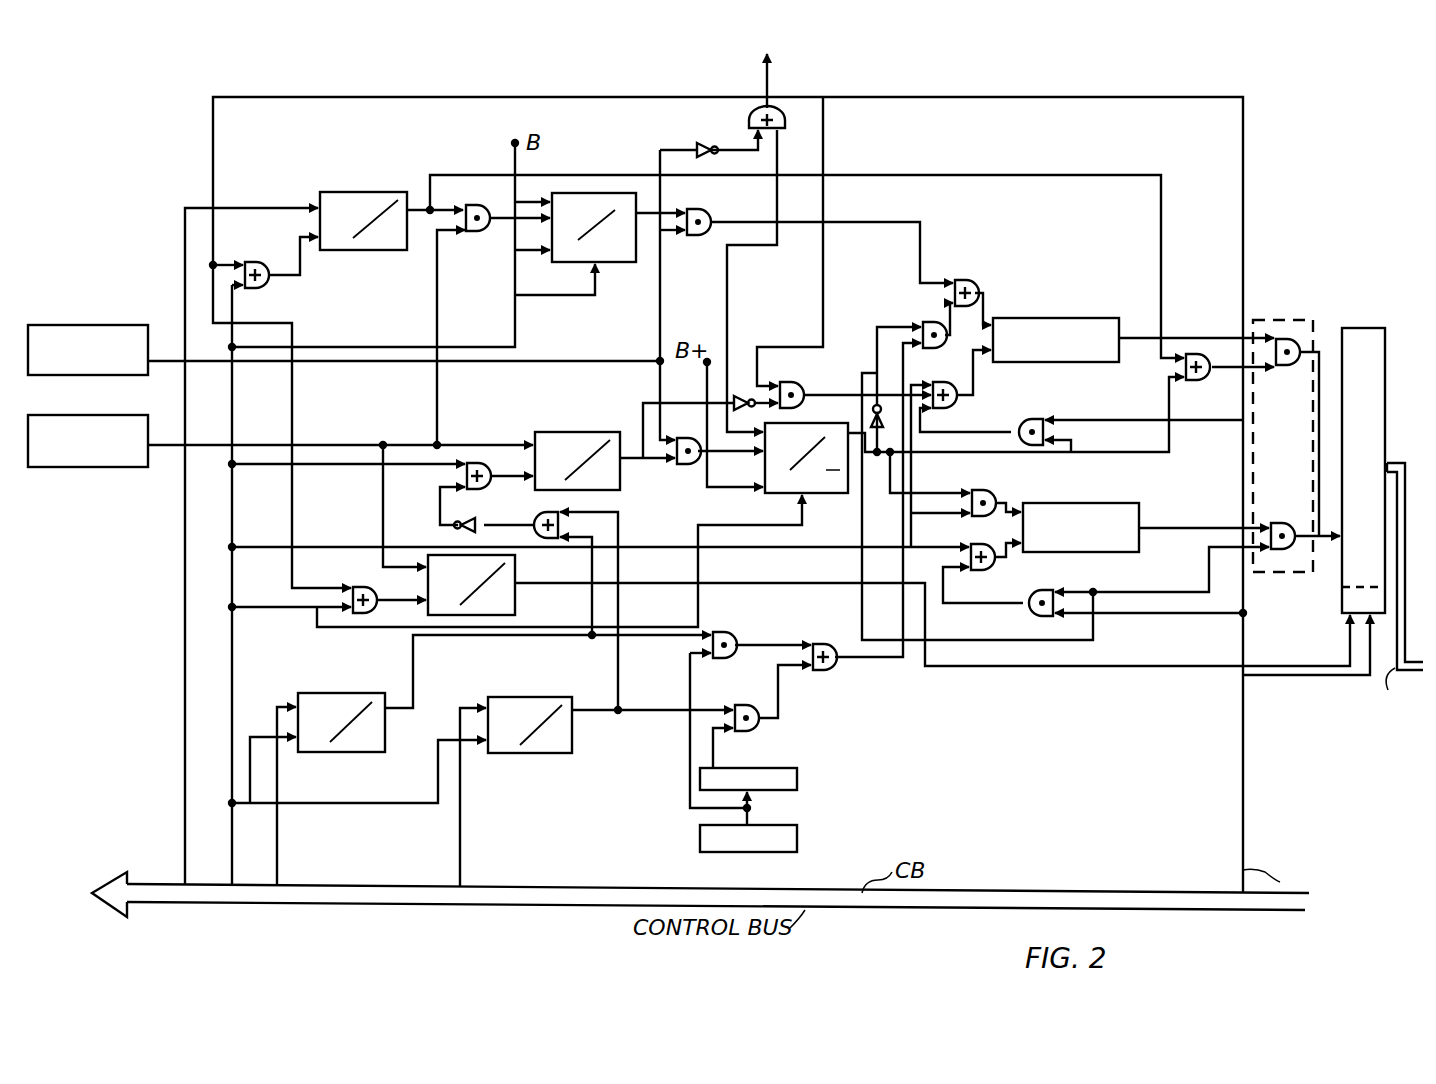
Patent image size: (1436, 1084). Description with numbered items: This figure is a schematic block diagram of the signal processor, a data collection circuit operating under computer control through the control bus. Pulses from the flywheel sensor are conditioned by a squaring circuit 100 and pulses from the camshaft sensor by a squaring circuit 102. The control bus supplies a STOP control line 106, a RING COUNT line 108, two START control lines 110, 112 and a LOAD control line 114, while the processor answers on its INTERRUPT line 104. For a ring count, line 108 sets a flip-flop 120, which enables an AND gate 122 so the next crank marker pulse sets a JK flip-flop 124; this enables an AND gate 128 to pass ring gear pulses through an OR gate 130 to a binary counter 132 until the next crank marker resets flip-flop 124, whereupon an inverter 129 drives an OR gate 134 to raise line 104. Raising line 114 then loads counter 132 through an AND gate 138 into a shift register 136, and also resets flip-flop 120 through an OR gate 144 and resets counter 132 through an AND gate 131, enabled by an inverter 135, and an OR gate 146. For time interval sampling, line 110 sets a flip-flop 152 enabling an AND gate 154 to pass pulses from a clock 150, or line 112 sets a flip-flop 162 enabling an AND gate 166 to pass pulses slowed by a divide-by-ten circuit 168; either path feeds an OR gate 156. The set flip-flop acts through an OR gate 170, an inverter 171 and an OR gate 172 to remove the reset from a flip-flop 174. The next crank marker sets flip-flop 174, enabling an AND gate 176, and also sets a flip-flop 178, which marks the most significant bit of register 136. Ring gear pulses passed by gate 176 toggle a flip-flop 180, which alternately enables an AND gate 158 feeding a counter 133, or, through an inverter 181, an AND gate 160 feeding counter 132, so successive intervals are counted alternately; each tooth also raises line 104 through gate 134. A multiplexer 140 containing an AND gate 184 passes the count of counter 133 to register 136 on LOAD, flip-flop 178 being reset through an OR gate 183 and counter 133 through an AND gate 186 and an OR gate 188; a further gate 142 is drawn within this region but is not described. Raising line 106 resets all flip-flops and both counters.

The squaring circuit 100 is at (107, 325).
The squaring circuit 102 is at (110, 415).
The INTERRUPT line 104 is at (767, 90).
The STOP control line 106 is at (232, 700).
The RING COUNT line 108 is at (185, 723).
The START control line 110 is at (277, 858).
The START control line 112 is at (460, 858).
The LOAD control line 114 is at (1250, 840).
The flip-flop 120 is at (365, 192).
The AND gate 122 is at (486, 214).
The JK flip-flop 124 is at (607, 267).
The AND gate 128 is at (708, 216).
The inverter 129 is at (700, 143).
The OR gate 130 is at (972, 282).
The AND gate 131 is at (800, 390).
The binary counter 132 is at (1078, 318).
The counter 133 is at (1092, 503).
The OR gate 134 is at (790, 124).
The inverter 135 is at (740, 390).
The shift register 136 is at (1355, 328).
The AND gate 138 is at (1292, 370).
The multiplexer 140 is at (1268, 322).
The OR gate 142 is at (1210, 386).
The OR gate 144 is at (270, 262).
The OR gate 146 is at (962, 365).
The clock 150 is at (790, 836).
The flip-flop 152 is at (328, 693).
The AND gate 154 is at (728, 630).
The OR gate 156 is at (833, 665).
The AND gate 158 is at (983, 490).
The AND gate 160 is at (930, 320).
The flip-flop 162 is at (525, 697).
The AND gate 166 is at (763, 702).
The divide-by-ten circuit 168 is at (788, 768).
The OR gate 170 is at (560, 512).
The inverter 171 is at (485, 504).
The OR gate 172 is at (495, 466).
The flip-flop 174 is at (580, 432).
The AND gate 176 is at (690, 437).
The flip-flop 178 is at (518, 576).
The flip-flop 180 is at (778, 497).
The inverter 181 is at (890, 416).
The OR gate 183 is at (378, 598).
The AND gate 184 is at (1290, 522).
The AND gate 186 is at (1028, 612).
The OR gate 188 is at (997, 565).